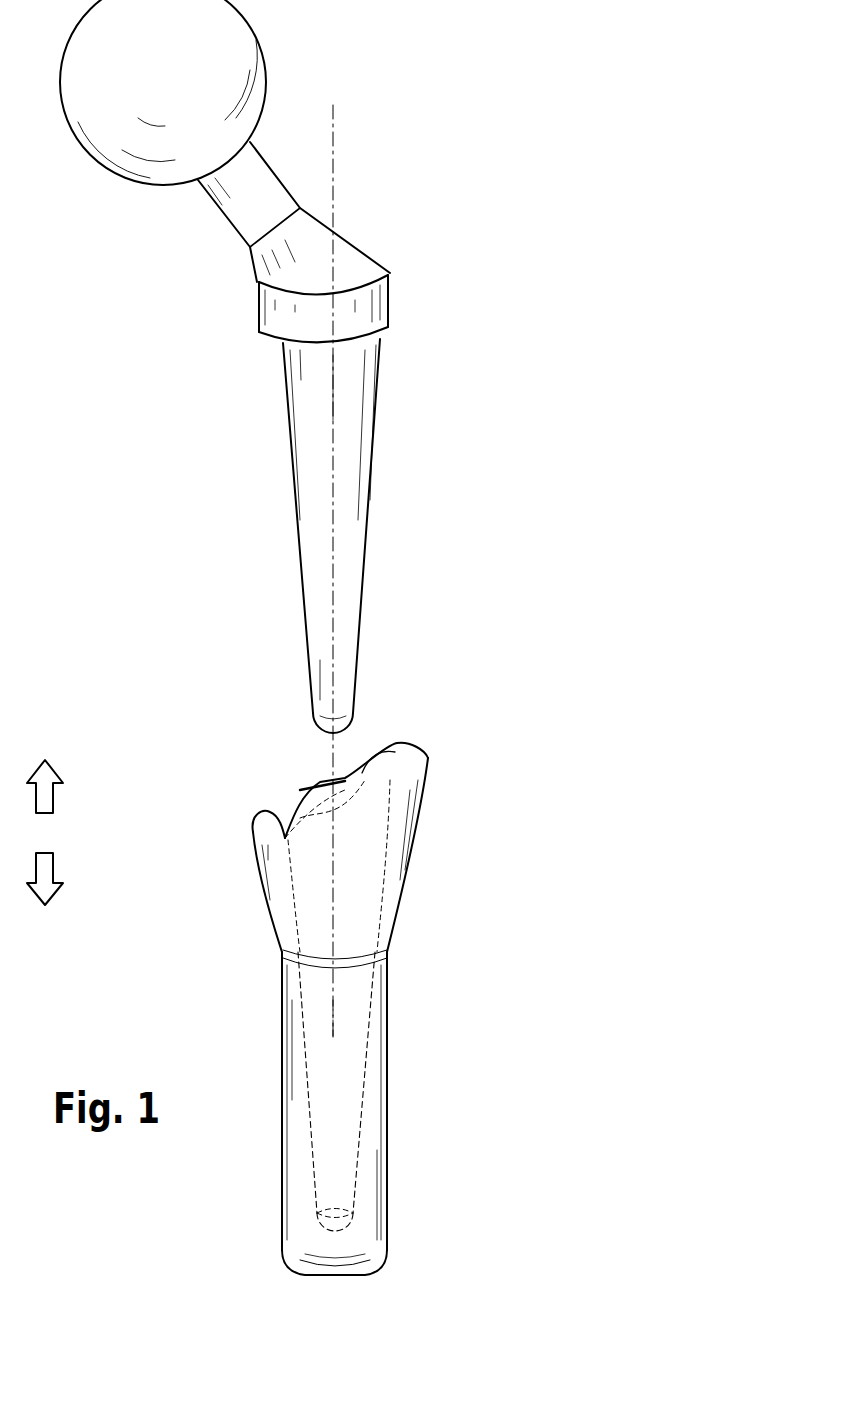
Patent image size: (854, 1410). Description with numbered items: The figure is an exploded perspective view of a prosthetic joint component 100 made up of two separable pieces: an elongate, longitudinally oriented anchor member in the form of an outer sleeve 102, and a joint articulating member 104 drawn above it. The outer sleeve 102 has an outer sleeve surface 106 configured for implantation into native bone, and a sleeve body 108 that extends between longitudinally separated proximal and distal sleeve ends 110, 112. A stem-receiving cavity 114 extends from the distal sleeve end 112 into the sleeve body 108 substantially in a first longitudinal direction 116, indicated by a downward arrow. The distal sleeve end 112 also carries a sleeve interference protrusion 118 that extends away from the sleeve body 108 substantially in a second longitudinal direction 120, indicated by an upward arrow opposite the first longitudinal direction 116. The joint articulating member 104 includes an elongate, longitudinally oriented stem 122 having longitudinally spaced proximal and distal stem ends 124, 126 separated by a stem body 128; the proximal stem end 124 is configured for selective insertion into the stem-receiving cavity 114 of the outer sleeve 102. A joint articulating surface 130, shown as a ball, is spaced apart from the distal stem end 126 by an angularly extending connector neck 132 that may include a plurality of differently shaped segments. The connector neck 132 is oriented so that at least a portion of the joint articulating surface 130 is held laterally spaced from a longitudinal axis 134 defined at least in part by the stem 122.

The prosthetic joint component 100 is at (470, 212).
The outer sleeve 102 is at (430, 1108).
The joint articulating member 104 is at (472, 409).
The outer sleeve surface 106 is at (362, 1183).
The sleeve body 108 is at (372, 1063).
The proximal sleeve end 110 is at (408, 1246).
The distal sleeve end 112 is at (445, 875).
The stem-receiving cavity 114 is at (360, 908).
The first longitudinal direction 116 is at (53, 867).
The sleeve interference protrusion 118 is at (395, 807).
The second longitudinal direction 120 is at (53, 798).
The stem 122 is at (395, 552).
The proximal stem end 124 is at (385, 722).
The distal stem end 126 is at (410, 355).
The stem body 128 is at (335, 497).
The joint articulating surface 130 is at (177, 71).
The connector neck 132 is at (205, 252).
The longitudinal axis 134 is at (333, 122).